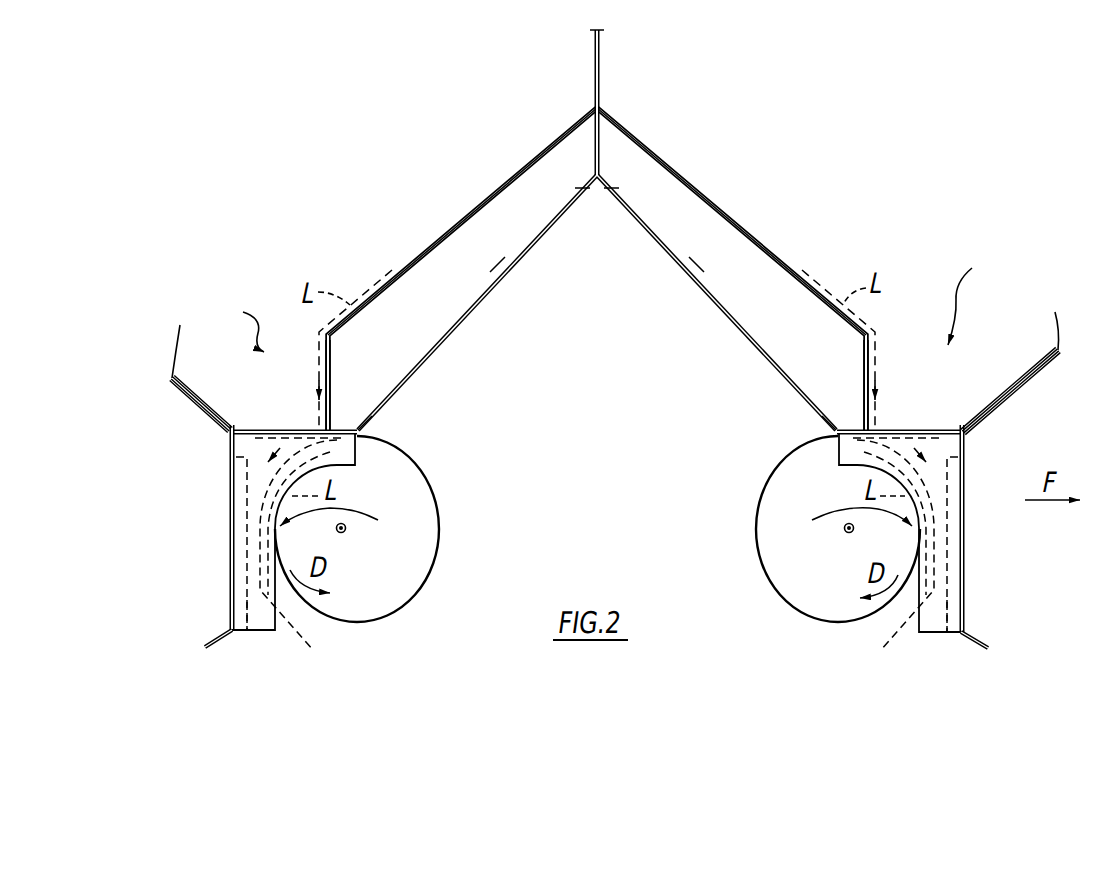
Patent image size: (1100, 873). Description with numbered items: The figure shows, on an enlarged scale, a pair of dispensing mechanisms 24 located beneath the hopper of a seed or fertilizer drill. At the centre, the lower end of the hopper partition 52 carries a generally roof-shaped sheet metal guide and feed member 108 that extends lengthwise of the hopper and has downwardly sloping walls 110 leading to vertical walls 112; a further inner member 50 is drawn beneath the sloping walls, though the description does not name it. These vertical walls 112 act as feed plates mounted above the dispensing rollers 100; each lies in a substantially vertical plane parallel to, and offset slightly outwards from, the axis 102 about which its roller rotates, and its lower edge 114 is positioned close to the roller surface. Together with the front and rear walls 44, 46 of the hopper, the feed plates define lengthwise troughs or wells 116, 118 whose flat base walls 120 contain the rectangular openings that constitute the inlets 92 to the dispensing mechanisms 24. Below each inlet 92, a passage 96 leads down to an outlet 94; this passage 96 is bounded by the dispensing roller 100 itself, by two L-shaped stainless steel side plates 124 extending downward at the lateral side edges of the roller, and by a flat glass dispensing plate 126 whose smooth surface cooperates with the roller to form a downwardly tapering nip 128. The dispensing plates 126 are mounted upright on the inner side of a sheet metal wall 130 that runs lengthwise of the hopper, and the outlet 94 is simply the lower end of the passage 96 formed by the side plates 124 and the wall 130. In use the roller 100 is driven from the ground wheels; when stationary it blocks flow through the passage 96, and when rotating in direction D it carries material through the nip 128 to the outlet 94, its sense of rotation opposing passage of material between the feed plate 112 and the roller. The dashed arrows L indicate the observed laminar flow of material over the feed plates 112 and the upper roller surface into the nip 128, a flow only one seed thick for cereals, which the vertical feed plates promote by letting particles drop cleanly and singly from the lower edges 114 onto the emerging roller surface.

The dispensing mechanism 24 is at (222, 545).
The front wall 44 is at (1022, 392).
The rear wall 46 is at (190, 405).
The inner rail 50 is at (515, 262).
The hopper partition 52 is at (594, 68).
The inlet 92 is at (262, 432).
The outlet 94 is at (248, 632).
The passage 96 is at (596, 527).
The dispensing roller 100 is at (425, 465).
The axis 102 is at (345, 535).
The guide and feed member 108 is at (531, 161).
The downwardly sloping walls 110 is at (437, 243).
The vertical walls 112 is at (330, 364).
The lower edges 114 is at (372, 430).
The trough or well 116 is at (974, 290).
The trough or well 118 is at (234, 321).
The flat base wall 120 is at (283, 427).
The side plate 124 is at (232, 620).
The dispensing plate 126 is at (597, 560).
The nip 128 is at (255, 478).
The sheet metal wall 130 is at (235, 594).